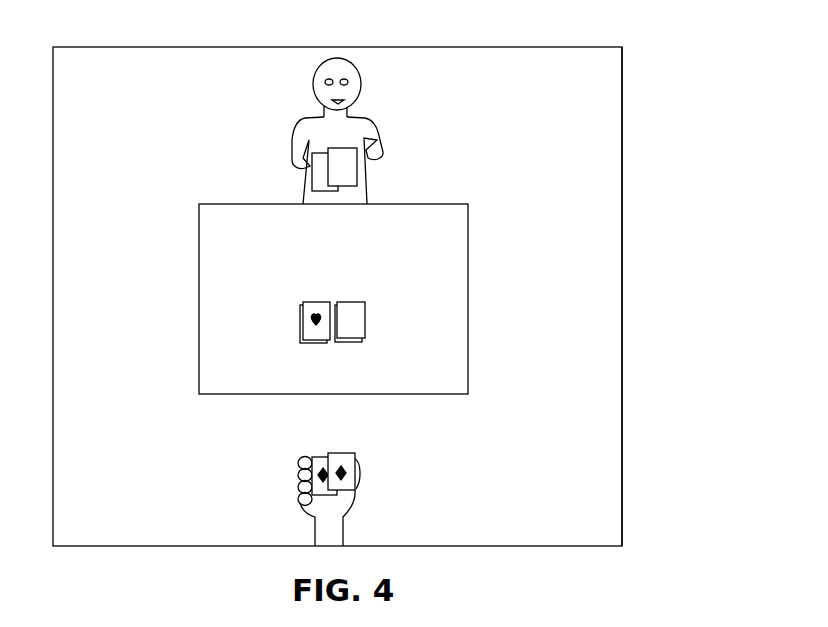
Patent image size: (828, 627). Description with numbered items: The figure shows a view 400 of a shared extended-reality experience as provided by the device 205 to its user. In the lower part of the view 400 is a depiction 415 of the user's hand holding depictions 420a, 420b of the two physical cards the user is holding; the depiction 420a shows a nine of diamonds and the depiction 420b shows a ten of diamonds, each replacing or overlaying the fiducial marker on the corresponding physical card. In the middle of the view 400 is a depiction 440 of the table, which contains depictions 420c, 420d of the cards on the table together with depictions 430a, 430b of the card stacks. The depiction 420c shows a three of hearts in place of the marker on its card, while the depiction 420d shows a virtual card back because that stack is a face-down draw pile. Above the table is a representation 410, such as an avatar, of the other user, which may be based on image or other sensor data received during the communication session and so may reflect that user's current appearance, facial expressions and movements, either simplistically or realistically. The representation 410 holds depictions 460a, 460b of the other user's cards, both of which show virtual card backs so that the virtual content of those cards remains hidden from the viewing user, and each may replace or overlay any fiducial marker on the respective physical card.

The view 400 is at (109, 95).
The device 205 is at (622, 140).
The representation 410 is at (313, 117).
The depiction 460a is at (312, 183).
The depiction 460b is at (361, 150).
The depiction 440 is at (257, 241).
The depiction 420c is at (323, 302).
The depiction 420d is at (366, 305).
The depiction 430a is at (308, 342).
The depiction 430b is at (355, 342).
The depiction 420a is at (312, 458).
The depiction 420b is at (355, 495).
The depiction 415 is at (315, 517).